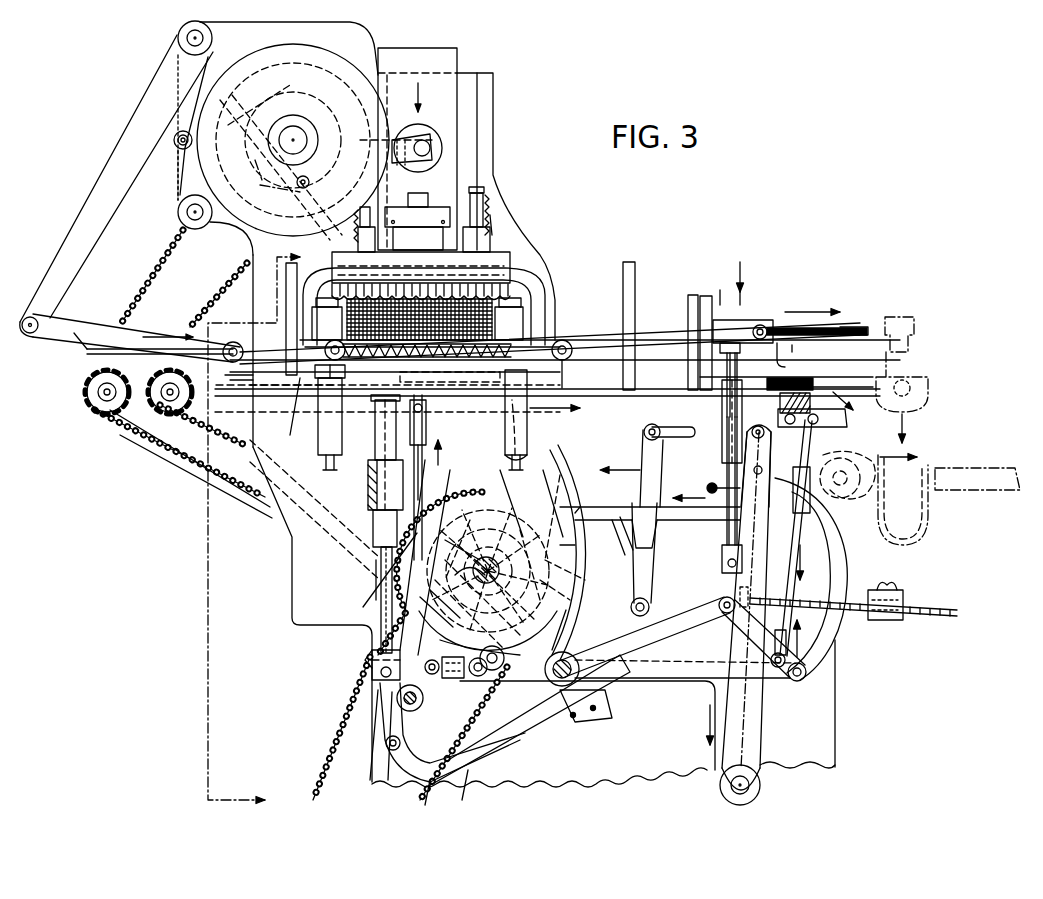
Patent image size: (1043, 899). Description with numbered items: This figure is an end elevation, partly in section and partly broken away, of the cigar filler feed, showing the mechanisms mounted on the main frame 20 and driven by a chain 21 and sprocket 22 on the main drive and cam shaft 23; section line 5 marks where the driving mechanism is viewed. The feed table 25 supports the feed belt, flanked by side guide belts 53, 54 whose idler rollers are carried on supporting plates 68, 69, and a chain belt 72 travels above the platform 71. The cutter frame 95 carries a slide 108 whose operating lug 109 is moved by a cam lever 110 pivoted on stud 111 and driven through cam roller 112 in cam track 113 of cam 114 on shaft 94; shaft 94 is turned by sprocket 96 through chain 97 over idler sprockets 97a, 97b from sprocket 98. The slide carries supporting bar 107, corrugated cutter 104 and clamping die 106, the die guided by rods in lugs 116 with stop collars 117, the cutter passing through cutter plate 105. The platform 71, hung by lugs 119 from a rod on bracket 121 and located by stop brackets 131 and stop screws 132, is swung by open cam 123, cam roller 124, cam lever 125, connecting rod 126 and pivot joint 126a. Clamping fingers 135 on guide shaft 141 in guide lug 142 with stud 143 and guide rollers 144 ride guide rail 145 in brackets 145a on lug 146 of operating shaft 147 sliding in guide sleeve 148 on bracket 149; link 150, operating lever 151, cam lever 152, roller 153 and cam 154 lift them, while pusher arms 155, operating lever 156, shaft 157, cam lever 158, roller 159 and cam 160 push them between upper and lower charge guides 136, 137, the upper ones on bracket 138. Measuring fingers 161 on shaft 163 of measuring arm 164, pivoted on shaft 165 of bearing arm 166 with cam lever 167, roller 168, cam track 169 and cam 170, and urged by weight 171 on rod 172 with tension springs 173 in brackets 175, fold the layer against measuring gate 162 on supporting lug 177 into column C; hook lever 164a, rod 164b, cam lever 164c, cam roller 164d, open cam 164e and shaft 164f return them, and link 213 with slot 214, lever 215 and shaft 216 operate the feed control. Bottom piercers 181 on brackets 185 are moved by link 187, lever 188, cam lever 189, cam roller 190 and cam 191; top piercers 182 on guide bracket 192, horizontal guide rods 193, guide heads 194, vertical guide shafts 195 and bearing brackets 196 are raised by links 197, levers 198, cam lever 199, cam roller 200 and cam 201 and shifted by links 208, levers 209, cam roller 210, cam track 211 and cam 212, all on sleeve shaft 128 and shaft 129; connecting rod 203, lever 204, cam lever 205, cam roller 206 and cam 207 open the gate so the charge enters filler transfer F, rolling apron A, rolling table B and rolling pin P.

The shaft 157 is at (178, 38).
The operating lever 156 is at (115, 160).
The pusher arms 155 is at (40, 335).
The feed table 25 is at (83, 345).
The cam lever 158 is at (180, 152).
The roller 159 is at (186, 185).
The stud 111 is at (180, 213).
The cam 160 is at (283, 58).
The shaft 94 is at (293, 124).
The cam track 113 is at (245, 125).
The sprocket 96 is at (255, 180).
The cam roller 112 is at (297, 184).
The cam lever 110 is at (235, 228).
The cutter frame 95 is at (248, 243).
The slide 108 is at (434, 46).
The cam 114 is at (360, 108).
The operating lug 109 is at (424, 140).
The supporting bar 107 is at (405, 238).
The stop collars 117 is at (484, 190).
The lugs 116 is at (490, 232).
The corrugated cutter 104 is at (512, 254).
The clamping die 106 is at (515, 275).
The chain belt 72 is at (540, 285).
The supporting plate 68 is at (545, 296).
The side guide belt 53 is at (548, 312).
The cutter plate 105 is at (556, 334).
The side guide belt 54 is at (286, 306).
The supporting plate 69 is at (316, 330).
The section line 5- 5 is at (267, 527).
The links 208 is at (668, 340).
The guide lug 142 is at (255, 360).
The lower charge guides 137 is at (638, 398).
The stud 143 is at (253, 300).
The guide rollers 144 is at (243, 388).
The guide rail 145 is at (290, 386).
The brackets 145a is at (629, 262).
The bracket 138 is at (693, 294).
The upper charge guides 136 is at (590, 345).
The guide heads 194 is at (742, 320).
The guide bracket 192 is at (786, 322).
The horizontal guide rods 193 is at (845, 325).
The top piercers 182 is at (790, 362).
The measuring fingers 161 is at (786, 370).
The measuring gate 162 is at (843, 369).
The resilient column C is at (795, 381).
The supporting lug 177 is at (832, 427).
The filler transfer F is at (923, 387).
The rolling pin P is at (843, 480).
The bottom piercers 181 is at (860, 496).
The rolling apron A is at (910, 500).
The rolling table B is at (977, 493).
The supporting brackets 185 is at (840, 548).
The link 187 is at (838, 572).
The hook lever 164a is at (617, 512).
The rod 164b is at (808, 543).
The connecting rod 203 is at (790, 590).
The adjustable weight 171 is at (904, 594).
The rod 172 is at (940, 618).
The levers 209 is at (556, 415).
The slot 214 is at (672, 420).
The link 213 is at (690, 445).
The lever 215 is at (643, 458).
The bearing brackets 196 is at (722, 412).
The shaft 163 is at (748, 445).
The brackets 175 is at (708, 480).
The tension spring 173 is at (727, 530).
The vertical guide shafts 195 is at (722, 556).
The links 197 is at (727, 597).
The shaft 216 is at (650, 608).
The cam lever 189 is at (630, 648).
The levers 198 is at (728, 626).
The lever 188 is at (796, 682).
The sleeve shaft 128 is at (600, 668).
The shaft 129 is at (564, 678).
The operating lever 151 is at (596, 692).
The lever 204 is at (678, 681).
The swingable bearing arm 166 is at (728, 694).
The measuring arm 164 is at (760, 742).
The shaft 165 is at (761, 787).
The main frame 20 is at (290, 530).
The cam 154 is at (570, 515).
The cam 170 is at (560, 513).
The roller 168 is at (596, 536).
The cam 212 is at (585, 556).
The roller 153 is at (582, 572).
The cam lever 152 is at (576, 590).
The cam lever 167 is at (570, 628).
The sprocket 98 is at (496, 565).
The main drive and cam shaft 23 is at (487, 585).
The cam roller 190 is at (478, 572).
The cam roller 164d is at (463, 561).
The cam roller 200 is at (478, 612).
The cam roller 210 is at (536, 520).
The cam track 211 is at (508, 460).
The cam track 169 is at (470, 480).
The cam roller 124 is at (424, 702).
The cam lever 125 is at (437, 676).
The cam roller 206 is at (462, 680).
The cam 207 is at (500, 680).
The cam lever 205 is at (490, 696).
The cam lever 199 is at (530, 705).
The shaft 164f is at (452, 732).
The cam lever 164c is at (372, 660).
The open cam 164e is at (370, 665).
The cam 201 is at (348, 698).
The link 150 is at (372, 742).
The chain 21 is at (318, 772).
The sprocket 22 is at (421, 557).
The open cam 123 is at (380, 575).
The guide shaft 141 is at (342, 418).
The lug 146 is at (375, 432).
The vertical operating shaft 147 is at (375, 448).
The guide sleeve 148 is at (373, 463).
The bracket 149 is at (368, 501).
The cam 191 is at (381, 572).
The platform 71 is at (414, 440).
The connecting rod 126 is at (420, 462).
The pivot joint 126a is at (450, 379).
The bracket 121 is at (430, 446).
The clamping fingers 135 is at (312, 400).
The lugs 119 is at (330, 400).
The stop brackets 131 is at (325, 455).
The adjustable stop screws 132 is at (320, 478).
The chain 97 is at (205, 298).
The idler sprocket 97a is at (118, 425).
The idler sprocket 97b is at (180, 420).